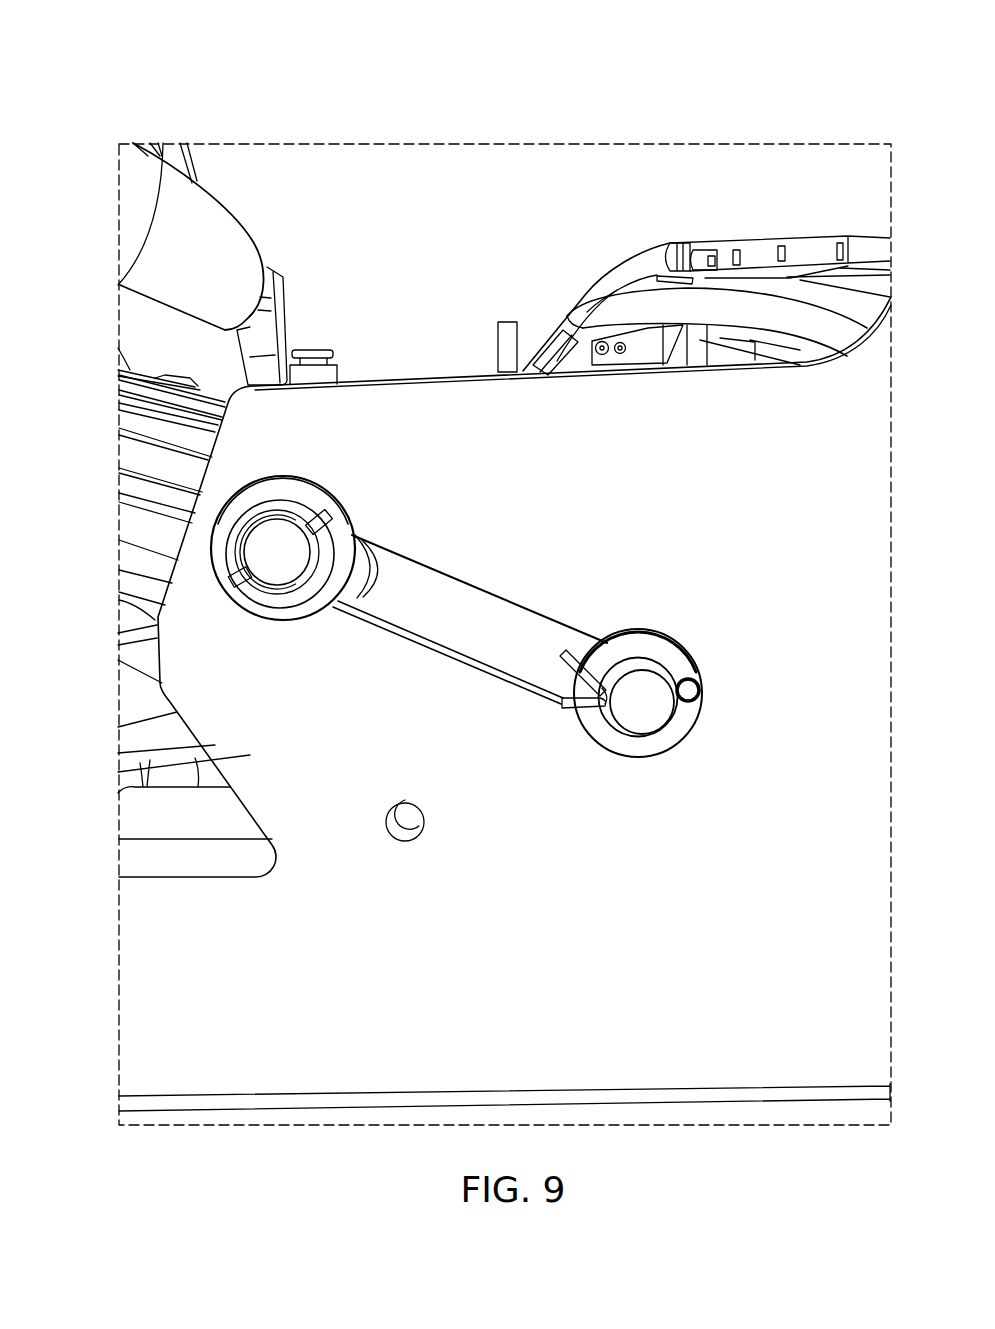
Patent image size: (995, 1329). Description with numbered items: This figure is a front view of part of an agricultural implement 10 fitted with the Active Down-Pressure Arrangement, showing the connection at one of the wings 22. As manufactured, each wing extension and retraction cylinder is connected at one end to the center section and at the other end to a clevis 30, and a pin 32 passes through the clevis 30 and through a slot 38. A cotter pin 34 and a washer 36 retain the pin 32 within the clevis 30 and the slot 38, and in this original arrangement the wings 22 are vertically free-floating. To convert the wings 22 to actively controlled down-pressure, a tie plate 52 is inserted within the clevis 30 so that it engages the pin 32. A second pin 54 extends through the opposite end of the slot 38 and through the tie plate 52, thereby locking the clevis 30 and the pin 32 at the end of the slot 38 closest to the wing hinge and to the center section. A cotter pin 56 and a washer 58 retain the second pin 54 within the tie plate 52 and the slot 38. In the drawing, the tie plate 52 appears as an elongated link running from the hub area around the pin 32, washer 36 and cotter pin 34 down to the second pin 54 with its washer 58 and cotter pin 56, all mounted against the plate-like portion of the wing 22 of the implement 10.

The agricultural implement 10 is at (858, 47).
The wing 22 is at (795, 888).
The clevis 30 is at (373, 555).
The pin 32 is at (275, 552).
The cotter pin 34 is at (313, 507).
The washer 36 is at (253, 497).
The slot 38 is at (495, 593).
The tie plate 52 is at (427, 593).
The second pin 54 is at (656, 718).
The cotter pin 56 is at (704, 690).
The washer 58 is at (676, 640).